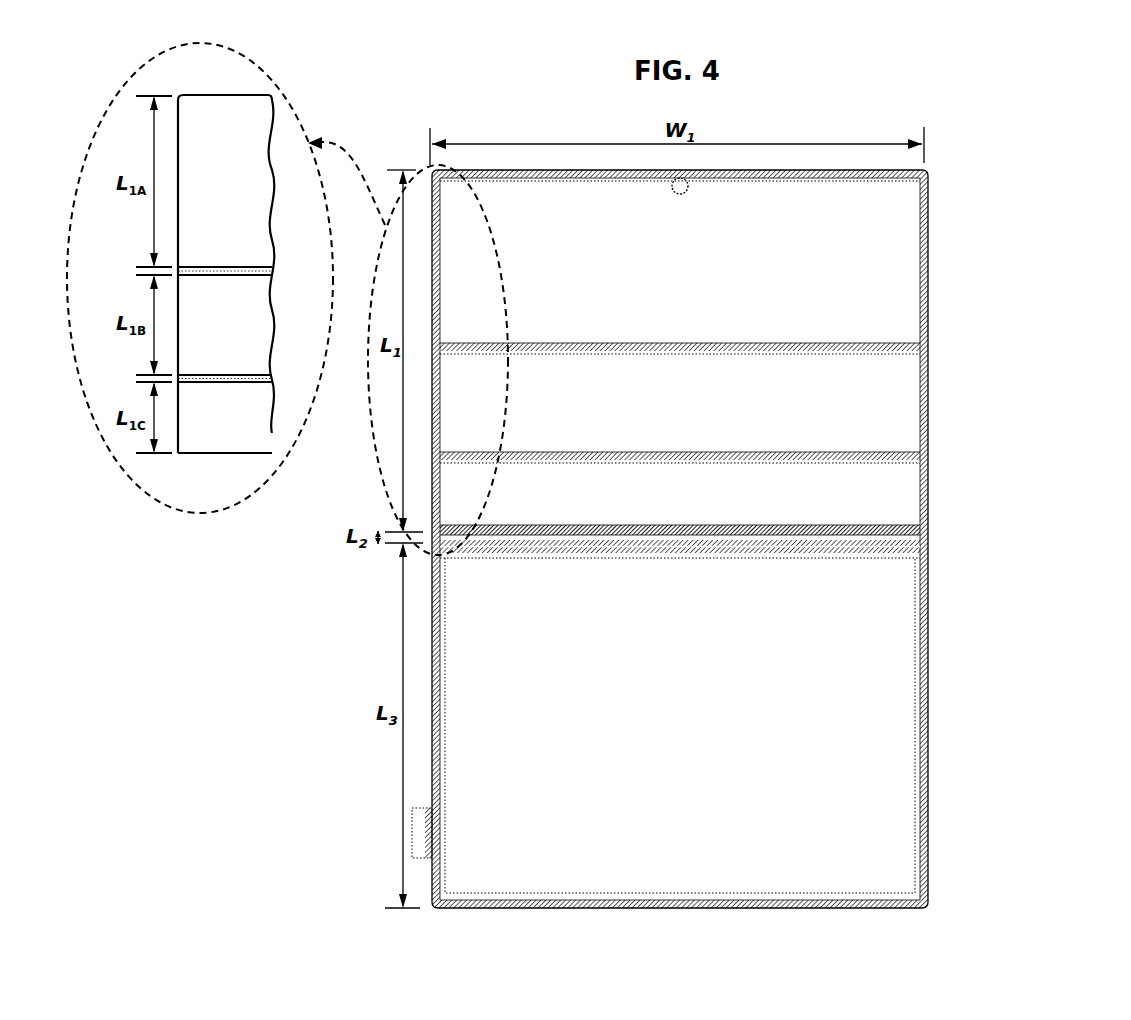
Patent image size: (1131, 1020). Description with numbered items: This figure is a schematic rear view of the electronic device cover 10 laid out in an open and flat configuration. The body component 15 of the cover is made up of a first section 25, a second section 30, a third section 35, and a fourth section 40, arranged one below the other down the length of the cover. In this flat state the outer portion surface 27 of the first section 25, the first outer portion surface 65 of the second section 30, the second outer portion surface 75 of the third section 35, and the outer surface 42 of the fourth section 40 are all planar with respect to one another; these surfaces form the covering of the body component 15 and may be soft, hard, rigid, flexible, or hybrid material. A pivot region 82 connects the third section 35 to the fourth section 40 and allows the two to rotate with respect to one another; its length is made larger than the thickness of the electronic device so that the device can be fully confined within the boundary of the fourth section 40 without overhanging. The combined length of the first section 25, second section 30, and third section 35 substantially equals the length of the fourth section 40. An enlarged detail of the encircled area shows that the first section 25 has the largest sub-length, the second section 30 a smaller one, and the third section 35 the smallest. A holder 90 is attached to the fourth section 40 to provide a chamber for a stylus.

The electronic device cover 10 is at (686, 544).
The body component 15 is at (659, 356).
The first section 25 is at (930, 258).
The outer portion surface 27 is at (680, 230).
The second section 30 is at (930, 383).
The third section 35 is at (930, 500).
The fourth section 40 is at (724, 719).
The outer surface 42 is at (680, 725).
The first outer portion surface 65 is at (684, 415).
The second outer portion surface 75 is at (684, 490).
The pivot region 82 is at (920, 535).
The holder 90 is at (413, 858).